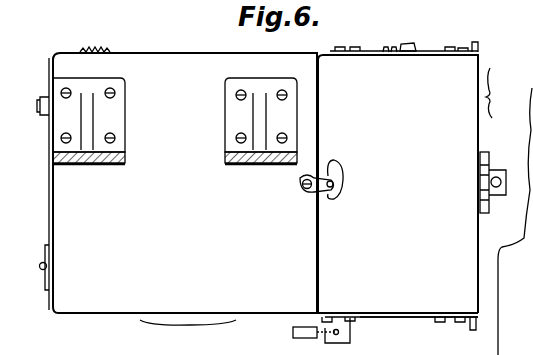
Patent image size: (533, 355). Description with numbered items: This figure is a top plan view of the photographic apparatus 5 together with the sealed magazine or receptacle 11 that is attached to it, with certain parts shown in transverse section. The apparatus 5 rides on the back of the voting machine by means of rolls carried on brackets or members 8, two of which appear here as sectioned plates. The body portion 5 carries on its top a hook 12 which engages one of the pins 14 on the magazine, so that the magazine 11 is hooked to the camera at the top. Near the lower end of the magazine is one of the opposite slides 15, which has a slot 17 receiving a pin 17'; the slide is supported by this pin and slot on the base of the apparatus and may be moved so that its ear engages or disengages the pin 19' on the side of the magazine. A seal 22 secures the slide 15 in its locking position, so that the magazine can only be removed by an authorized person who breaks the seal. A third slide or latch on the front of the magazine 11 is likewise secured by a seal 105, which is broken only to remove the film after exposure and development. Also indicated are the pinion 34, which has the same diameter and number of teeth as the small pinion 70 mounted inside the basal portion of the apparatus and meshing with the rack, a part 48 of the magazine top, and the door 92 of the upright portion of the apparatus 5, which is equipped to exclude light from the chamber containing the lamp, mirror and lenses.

The photographic apparatus 5 is at (183, 200).
The brackets 8 is at (104, 165).
The magazine 11 is at (417, 186).
The hook 12 is at (333, 205).
The pins 14 is at (345, 185).
The slide 15 is at (416, 319).
The slot 17 is at (365, 295).
The pin 17' is at (461, 299).
The pin 19' is at (387, 315).
The seal 22 is at (292, 344).
The pinion 34 is at (100, 45).
The stop 48 is at (412, 44).
The pinion 70 is at (386, 46).
The door 92 is at (51, 182).
The seal 105 is at (495, 168).